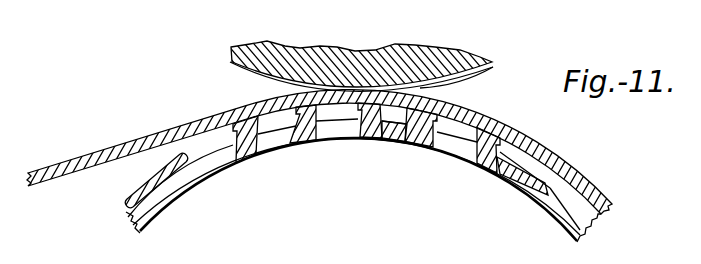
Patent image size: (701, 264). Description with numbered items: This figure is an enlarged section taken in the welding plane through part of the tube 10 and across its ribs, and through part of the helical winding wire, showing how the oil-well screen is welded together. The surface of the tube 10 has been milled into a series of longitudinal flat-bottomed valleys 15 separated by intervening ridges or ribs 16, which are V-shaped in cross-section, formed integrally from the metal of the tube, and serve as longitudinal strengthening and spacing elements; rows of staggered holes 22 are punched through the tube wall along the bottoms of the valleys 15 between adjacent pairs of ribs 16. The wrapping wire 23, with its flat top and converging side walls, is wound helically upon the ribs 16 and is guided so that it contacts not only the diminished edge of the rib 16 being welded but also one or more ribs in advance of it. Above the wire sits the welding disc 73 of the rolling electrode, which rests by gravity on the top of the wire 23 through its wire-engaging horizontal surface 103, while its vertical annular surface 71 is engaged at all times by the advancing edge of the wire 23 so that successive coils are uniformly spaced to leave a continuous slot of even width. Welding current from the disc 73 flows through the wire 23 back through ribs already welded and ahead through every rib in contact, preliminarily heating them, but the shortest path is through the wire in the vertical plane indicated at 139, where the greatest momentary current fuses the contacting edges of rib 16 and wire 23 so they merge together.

The tube 10 is at (165, 195).
The flat-bottomed valleys 15 is at (417, 118).
The ridges or ribs 16 is at (129, 196).
The holes 22 is at (222, 165).
The wrapping wire 23 is at (107, 152).
The vertical annular surface 71 is at (258, 74).
The welding disc 73 is at (470, 74).
The wire-engaging horizontal surface 103 is at (300, 80).
The vertical plane current path 139 is at (363, 107).